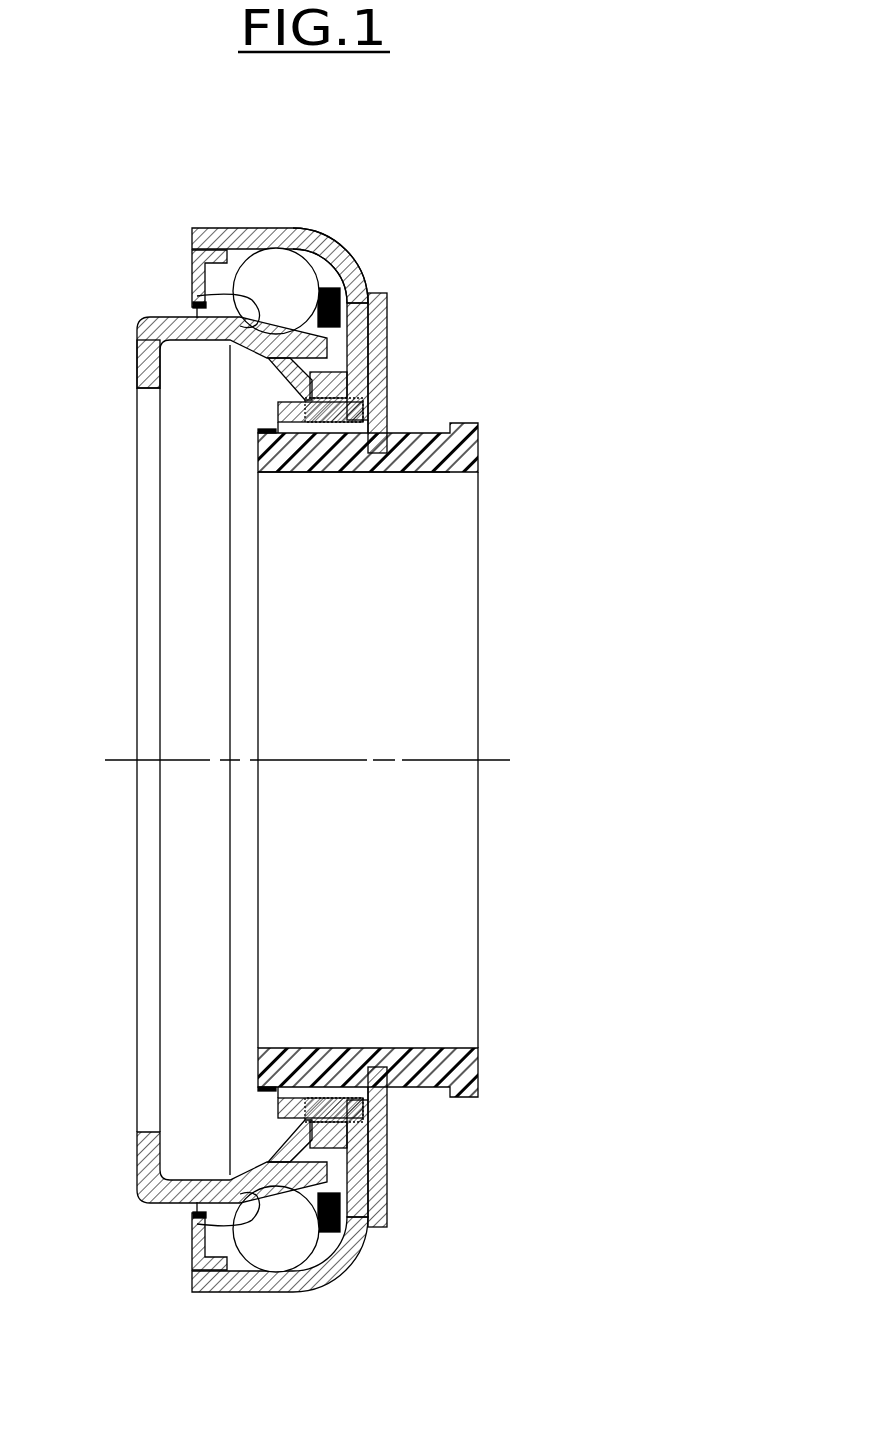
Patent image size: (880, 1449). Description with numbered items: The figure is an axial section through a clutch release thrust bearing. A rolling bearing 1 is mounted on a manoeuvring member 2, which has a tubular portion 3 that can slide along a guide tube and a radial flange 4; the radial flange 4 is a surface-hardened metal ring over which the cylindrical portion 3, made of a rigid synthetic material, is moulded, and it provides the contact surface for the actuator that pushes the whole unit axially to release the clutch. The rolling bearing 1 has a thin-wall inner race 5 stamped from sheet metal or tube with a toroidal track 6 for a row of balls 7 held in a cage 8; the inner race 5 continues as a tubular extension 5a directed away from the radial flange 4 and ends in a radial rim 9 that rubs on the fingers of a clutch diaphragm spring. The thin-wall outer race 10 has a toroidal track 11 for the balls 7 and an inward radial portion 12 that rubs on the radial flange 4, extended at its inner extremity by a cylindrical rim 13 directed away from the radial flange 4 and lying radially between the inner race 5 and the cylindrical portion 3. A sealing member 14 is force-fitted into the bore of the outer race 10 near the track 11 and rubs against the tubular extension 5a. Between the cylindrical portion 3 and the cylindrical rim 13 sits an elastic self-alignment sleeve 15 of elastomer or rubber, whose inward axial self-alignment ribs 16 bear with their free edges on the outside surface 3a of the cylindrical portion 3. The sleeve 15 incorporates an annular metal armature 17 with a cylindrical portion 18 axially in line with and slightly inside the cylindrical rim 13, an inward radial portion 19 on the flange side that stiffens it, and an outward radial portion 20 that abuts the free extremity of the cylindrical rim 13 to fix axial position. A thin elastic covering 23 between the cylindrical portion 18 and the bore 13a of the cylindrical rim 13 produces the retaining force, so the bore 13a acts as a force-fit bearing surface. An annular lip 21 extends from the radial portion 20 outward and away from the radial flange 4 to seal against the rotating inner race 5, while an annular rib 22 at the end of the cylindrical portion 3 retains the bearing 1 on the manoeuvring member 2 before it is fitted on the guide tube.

The rolling bearing 1 is at (245, 236).
The manoeuvring member 2 is at (490, 451).
The tubular portion 3 is at (397, 457).
The outside surface of the cylindrical portion 3a is at (318, 432).
The radial flange 4 is at (384, 310).
The inner race 5 is at (137, 420).
The tubular extension 5a is at (190, 316).
The toroidal track 6 is at (200, 294).
The balls 7 is at (265, 285).
The cage 8 is at (340, 262).
The radial rim 9 is at (147, 358).
The outer race 10 is at (237, 240).
The toroidal track 11 is at (290, 262).
The radial portion 12 is at (368, 292).
The cylindrical rim 13 is at (370, 370).
The bore of the cylindrical rim 13a is at (362, 383).
The sealing member 14 is at (192, 263).
The self-alignment sleeve 15 is at (358, 405).
The self-alignment ribs 16 is at (303, 1090).
The annular metal armature 17 is at (367, 1132).
The cylindrical portion 18 is at (325, 1105).
The radial portion 19 is at (383, 1107).
The radial portion 20 is at (295, 1136).
The annular lip 21 is at (270, 1157).
The annular rib 22 is at (267, 1098).
The elastic covering 23 is at (383, 1165).